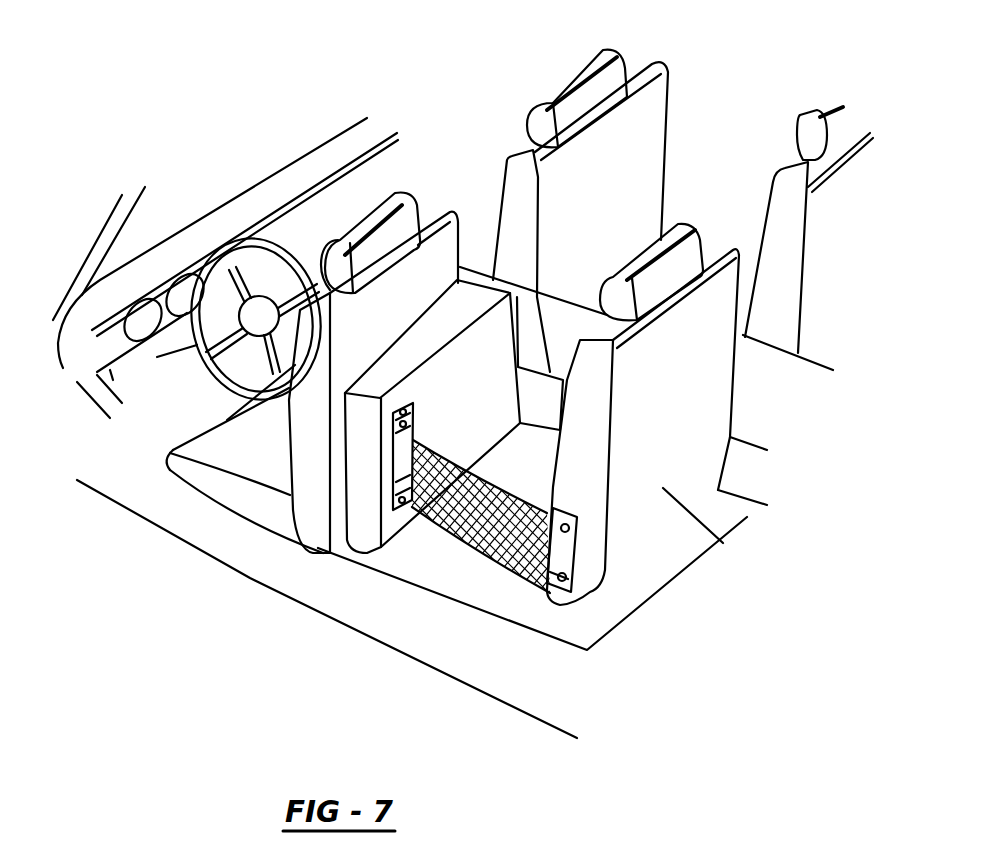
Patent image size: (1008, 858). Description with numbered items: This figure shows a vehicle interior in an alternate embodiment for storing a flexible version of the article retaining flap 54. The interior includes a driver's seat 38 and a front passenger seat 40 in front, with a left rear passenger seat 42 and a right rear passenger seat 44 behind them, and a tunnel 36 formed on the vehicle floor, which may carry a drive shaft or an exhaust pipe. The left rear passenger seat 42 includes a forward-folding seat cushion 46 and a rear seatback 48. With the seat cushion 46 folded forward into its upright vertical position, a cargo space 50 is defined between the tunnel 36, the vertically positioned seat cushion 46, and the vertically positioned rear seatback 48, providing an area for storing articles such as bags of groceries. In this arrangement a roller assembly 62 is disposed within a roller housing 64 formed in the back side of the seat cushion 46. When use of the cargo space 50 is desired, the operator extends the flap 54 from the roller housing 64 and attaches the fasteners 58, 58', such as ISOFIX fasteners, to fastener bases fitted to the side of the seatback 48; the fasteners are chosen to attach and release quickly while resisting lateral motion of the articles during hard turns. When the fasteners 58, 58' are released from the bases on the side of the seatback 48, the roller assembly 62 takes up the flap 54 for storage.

The tunnel 36 is at (763, 397).
The driver's seat 38 is at (252, 498).
The front passenger seat 40 is at (642, 72).
The left rear passenger seat 42 is at (603, 562).
The right rear passenger seat 44 is at (843, 183).
The forward-folding seat cushion 46 is at (367, 537).
The rear seatback 48 is at (723, 543).
The cargo space 50 is at (528, 453).
The article retaining flap 54 is at (500, 527).
The fastener 58 is at (659, 564).
The fastener 58' is at (632, 649).
The roller assembly 62 is at (393, 427).
The roller housing 64 is at (410, 445).